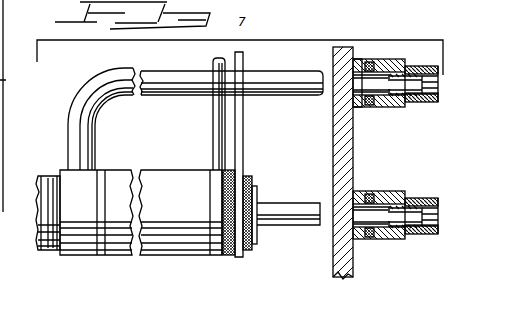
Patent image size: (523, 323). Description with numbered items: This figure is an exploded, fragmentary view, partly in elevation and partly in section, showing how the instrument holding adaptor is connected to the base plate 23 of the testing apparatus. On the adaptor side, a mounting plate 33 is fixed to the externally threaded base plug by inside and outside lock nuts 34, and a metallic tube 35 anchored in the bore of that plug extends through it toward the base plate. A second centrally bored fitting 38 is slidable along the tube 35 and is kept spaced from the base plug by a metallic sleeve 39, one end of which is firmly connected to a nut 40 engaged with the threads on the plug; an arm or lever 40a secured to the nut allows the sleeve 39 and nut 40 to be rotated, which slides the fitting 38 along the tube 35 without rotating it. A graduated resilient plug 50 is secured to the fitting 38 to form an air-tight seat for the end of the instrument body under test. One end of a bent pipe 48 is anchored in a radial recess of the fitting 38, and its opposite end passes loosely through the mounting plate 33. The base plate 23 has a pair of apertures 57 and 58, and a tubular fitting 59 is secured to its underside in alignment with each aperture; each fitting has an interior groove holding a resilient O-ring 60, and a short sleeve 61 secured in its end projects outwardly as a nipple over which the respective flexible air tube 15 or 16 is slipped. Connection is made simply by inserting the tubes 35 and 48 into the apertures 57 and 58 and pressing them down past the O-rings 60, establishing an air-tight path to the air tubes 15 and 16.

The bent pipe 48 is at (93, 90).
The arm or lever 40a is at (213, 135).
The mounting plate 33 is at (244, 146).
The graduated resilient plug 50 is at (52, 254).
The fitting 38 is at (73, 248).
The metallic sleeve 39 is at (156, 250).
The nut 40 is at (212, 206).
The lock nuts 34 is at (247, 258).
The metallic tube 35 is at (288, 210).
The base plate 23 is at (344, 148).
The aperture 57 is at (344, 86).
The tubular fitting 59 is at (362, 62).
The resilient O-ring 60 is at (373, 104).
The short sleeve 61 is at (398, 90).
The flexible air tube 15 is at (418, 65).
The aperture 58 is at (346, 203).
The flexible air tube 16 is at (414, 238).